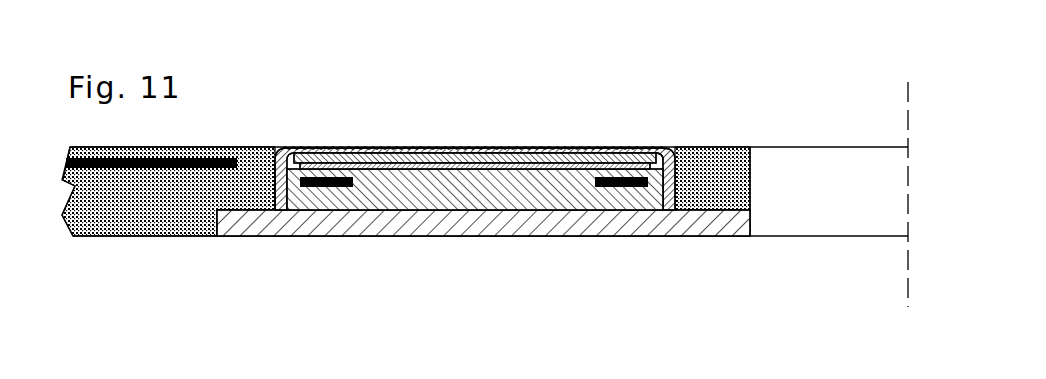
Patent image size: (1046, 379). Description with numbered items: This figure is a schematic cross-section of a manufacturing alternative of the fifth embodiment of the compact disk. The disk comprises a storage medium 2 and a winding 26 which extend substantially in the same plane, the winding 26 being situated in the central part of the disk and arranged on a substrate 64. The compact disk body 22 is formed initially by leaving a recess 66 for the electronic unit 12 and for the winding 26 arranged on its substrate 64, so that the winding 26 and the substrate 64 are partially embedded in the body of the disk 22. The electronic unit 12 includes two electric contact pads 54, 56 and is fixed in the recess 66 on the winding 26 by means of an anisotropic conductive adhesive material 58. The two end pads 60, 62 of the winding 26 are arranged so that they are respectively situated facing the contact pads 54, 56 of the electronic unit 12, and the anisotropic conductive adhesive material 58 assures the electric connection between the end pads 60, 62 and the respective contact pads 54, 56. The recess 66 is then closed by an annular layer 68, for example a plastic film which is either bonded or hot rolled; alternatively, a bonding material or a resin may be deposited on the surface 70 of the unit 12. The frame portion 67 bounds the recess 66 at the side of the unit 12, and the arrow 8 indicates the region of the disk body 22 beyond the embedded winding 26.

The storage medium 2 is at (150, 172).
The cavity / viewing direction 8 is at (826, 194).
The electronic unit 12 is at (468, 203).
The compact disk body 22 is at (708, 176).
The winding 26 is at (476, 146).
The electric contact pad 54 is at (333, 188).
The electric contact pad 56 is at (618, 189).
The anisotropic conductive adhesive material 58 is at (595, 147).
The end pad of winding 60 is at (331, 147).
The end pad of winding 62 is at (625, 147).
The substrate 64 is at (397, 147).
The recess 66 is at (252, 187).
The frame 67 is at (275, 147).
The annular layer 68 is at (403, 222).
The surface of unit 70 is at (537, 233).